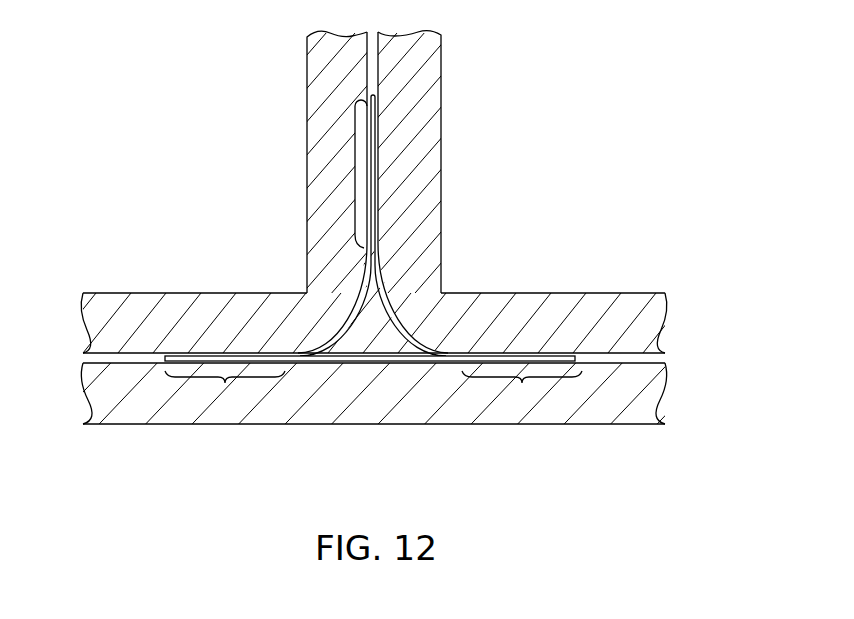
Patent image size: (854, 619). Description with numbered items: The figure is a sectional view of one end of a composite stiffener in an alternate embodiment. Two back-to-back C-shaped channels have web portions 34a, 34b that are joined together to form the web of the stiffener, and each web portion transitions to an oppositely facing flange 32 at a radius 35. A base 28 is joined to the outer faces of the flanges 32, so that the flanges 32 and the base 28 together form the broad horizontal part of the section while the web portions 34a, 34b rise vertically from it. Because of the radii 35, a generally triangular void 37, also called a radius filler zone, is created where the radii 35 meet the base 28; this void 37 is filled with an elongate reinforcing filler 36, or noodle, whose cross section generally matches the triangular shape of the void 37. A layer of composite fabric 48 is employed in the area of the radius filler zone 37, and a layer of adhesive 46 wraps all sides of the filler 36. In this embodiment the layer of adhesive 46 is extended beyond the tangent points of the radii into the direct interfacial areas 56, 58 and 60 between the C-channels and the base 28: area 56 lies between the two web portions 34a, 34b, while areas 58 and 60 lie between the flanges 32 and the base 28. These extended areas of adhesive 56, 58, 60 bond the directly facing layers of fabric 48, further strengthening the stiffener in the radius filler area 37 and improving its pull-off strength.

The base 28 is at (132, 410).
The flange 32 is at (157, 323).
The web portion 34a is at (328, 118).
The web portion 34b is at (420, 172).
The radius 35 is at (345, 312).
The reinforcing filler 36 is at (355, 347).
The void 37 is at (330, 320).
The layer of adhesive 46 is at (377, 123).
The layer of composite fabric 48 is at (372, 62).
The direct interfacial area 56 is at (353, 163).
The direct interfacial area 58 is at (224, 383).
The direct interfacial area 60 is at (522, 383).